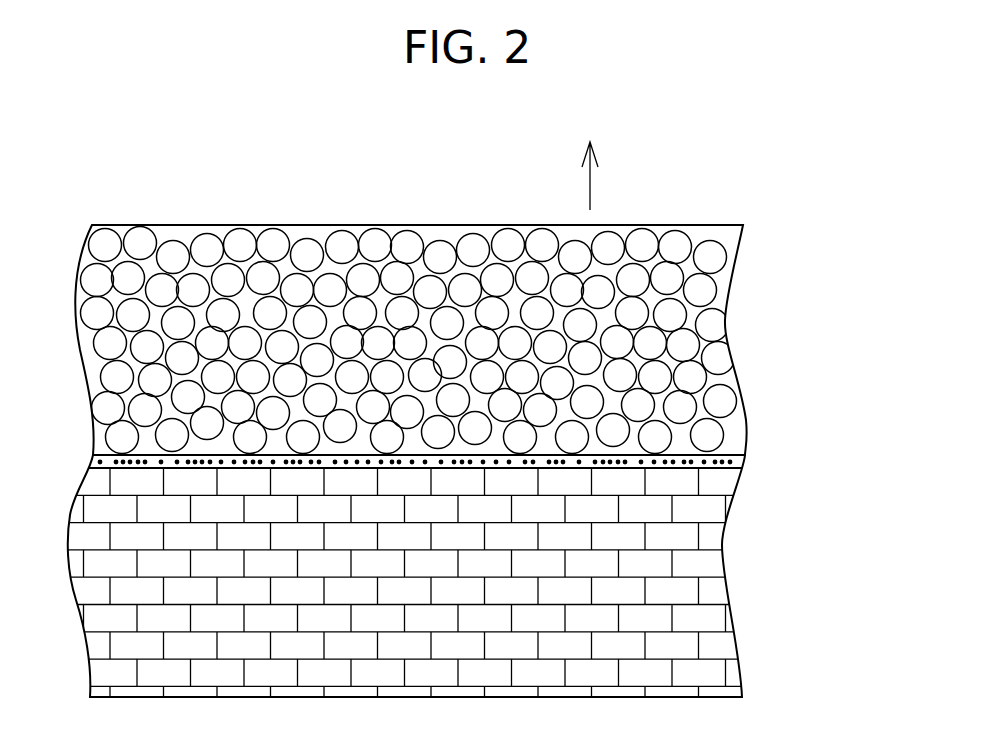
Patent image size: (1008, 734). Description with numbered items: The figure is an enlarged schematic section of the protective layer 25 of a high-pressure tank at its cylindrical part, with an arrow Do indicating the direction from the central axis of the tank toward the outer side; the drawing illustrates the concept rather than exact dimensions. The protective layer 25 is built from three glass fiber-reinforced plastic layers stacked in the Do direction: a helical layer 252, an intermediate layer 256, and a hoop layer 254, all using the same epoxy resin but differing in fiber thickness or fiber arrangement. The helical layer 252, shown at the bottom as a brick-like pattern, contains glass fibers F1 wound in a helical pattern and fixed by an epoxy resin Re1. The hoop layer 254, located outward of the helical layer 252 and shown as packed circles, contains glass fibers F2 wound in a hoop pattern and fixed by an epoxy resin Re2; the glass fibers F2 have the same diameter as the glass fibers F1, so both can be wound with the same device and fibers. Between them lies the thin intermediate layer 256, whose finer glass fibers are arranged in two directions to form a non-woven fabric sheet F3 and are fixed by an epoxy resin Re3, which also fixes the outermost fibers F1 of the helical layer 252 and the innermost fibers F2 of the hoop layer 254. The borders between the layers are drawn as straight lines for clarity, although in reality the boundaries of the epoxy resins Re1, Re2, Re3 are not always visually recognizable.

The protective layer 25 is at (853, 293).
The helical layer 252 is at (690, 540).
The hoop layer 254 is at (692, 328).
The intermediate layer 256 is at (735, 461).
The glass fibers F1 is at (703, 617).
The glass fibers F2 is at (710, 262).
The non-woven fabric sheet F3 is at (108, 452).
The epoxy resin Re1 is at (725, 658).
The epoxy resin Re2 is at (650, 302).
The epoxy resin Re3 is at (95, 462).
The arrow Do is at (608, 178).